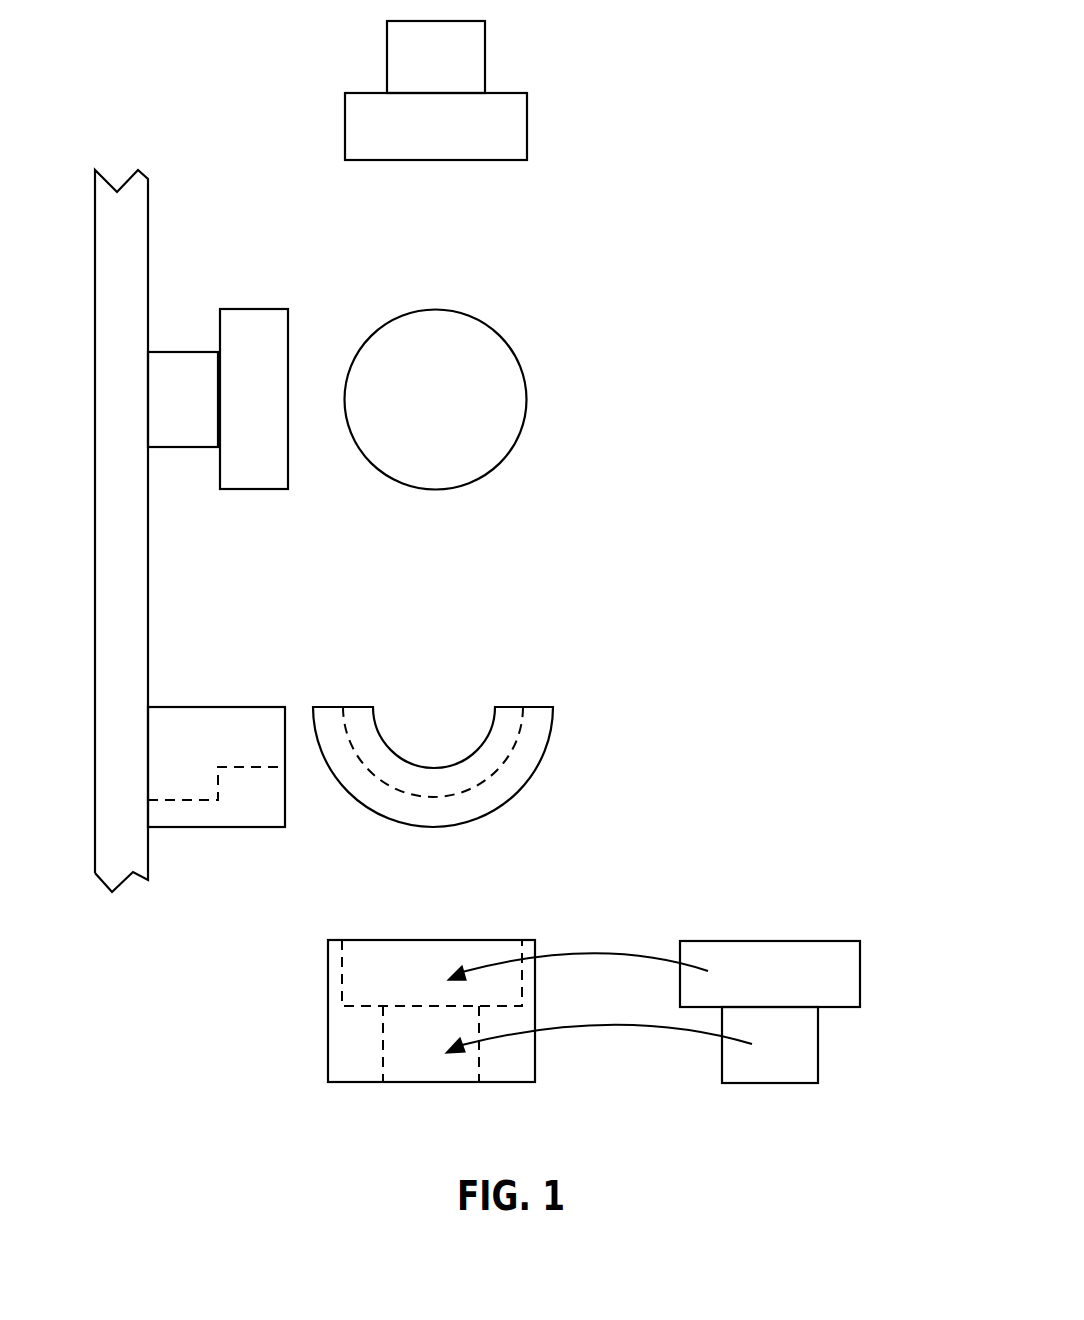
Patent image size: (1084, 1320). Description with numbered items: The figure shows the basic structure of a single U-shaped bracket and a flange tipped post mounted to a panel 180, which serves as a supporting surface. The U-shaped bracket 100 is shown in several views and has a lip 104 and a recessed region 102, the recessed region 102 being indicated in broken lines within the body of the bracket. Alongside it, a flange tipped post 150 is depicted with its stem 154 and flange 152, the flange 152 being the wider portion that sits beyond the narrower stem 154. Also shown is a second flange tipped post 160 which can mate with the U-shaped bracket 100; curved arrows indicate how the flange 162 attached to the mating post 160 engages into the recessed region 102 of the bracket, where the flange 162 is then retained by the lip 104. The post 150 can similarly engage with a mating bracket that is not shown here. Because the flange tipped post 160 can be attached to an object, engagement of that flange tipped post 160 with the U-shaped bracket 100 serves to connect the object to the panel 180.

The U-shaped bracket 100 is at (515, 792).
The recessed region 102 is at (180, 785).
The lip 104 is at (250, 782).
The flange tipped post 150 is at (512, 348).
The flange 152 is at (527, 127).
The stem 154 is at (485, 58).
The second flange tipped post 160 is at (818, 1045).
The flange 162 is at (860, 973).
The panel 180 is at (148, 213).